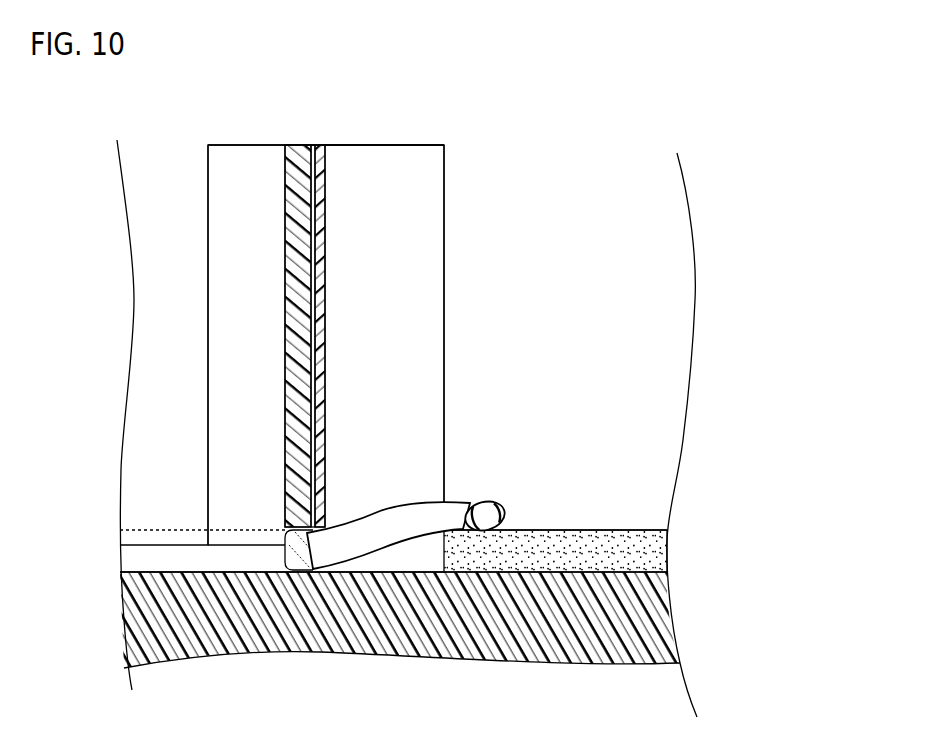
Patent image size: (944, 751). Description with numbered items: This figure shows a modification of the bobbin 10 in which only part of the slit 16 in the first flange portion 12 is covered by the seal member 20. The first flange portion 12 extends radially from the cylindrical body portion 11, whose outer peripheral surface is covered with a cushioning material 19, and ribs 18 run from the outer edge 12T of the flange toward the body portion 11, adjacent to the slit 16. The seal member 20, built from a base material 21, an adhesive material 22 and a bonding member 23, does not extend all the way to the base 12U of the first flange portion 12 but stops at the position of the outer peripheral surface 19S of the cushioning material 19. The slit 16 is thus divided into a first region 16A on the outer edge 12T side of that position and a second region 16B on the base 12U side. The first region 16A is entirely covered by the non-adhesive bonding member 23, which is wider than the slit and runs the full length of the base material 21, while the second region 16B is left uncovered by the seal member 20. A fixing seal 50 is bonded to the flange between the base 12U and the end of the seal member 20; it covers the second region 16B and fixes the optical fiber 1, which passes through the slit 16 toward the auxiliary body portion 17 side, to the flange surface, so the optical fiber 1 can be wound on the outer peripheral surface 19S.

The optical fiber 1 is at (482, 522).
The bobbin 10 is at (592, 180).
The body portion 11 is at (630, 645).
The first flange portion 12 is at (445, 157).
The outer edge 12T is at (388, 143).
The base 12U is at (368, 573).
The slit 16 is at (359, 178).
The first region 16A is at (362, 348).
The second region 16B is at (389, 570).
The auxiliary body portion 17 is at (185, 637).
The ribs 18 is at (225, 170).
The cushioning material 19 is at (632, 530).
The outer peripheral surface 19S is at (592, 530).
The seal member 20 is at (252, 93).
The base material 21 is at (293, 145).
The adhesive material 22 is at (312, 145).
The bonding member 23 is at (318, 145).
The fixing seal 50 is at (290, 533).